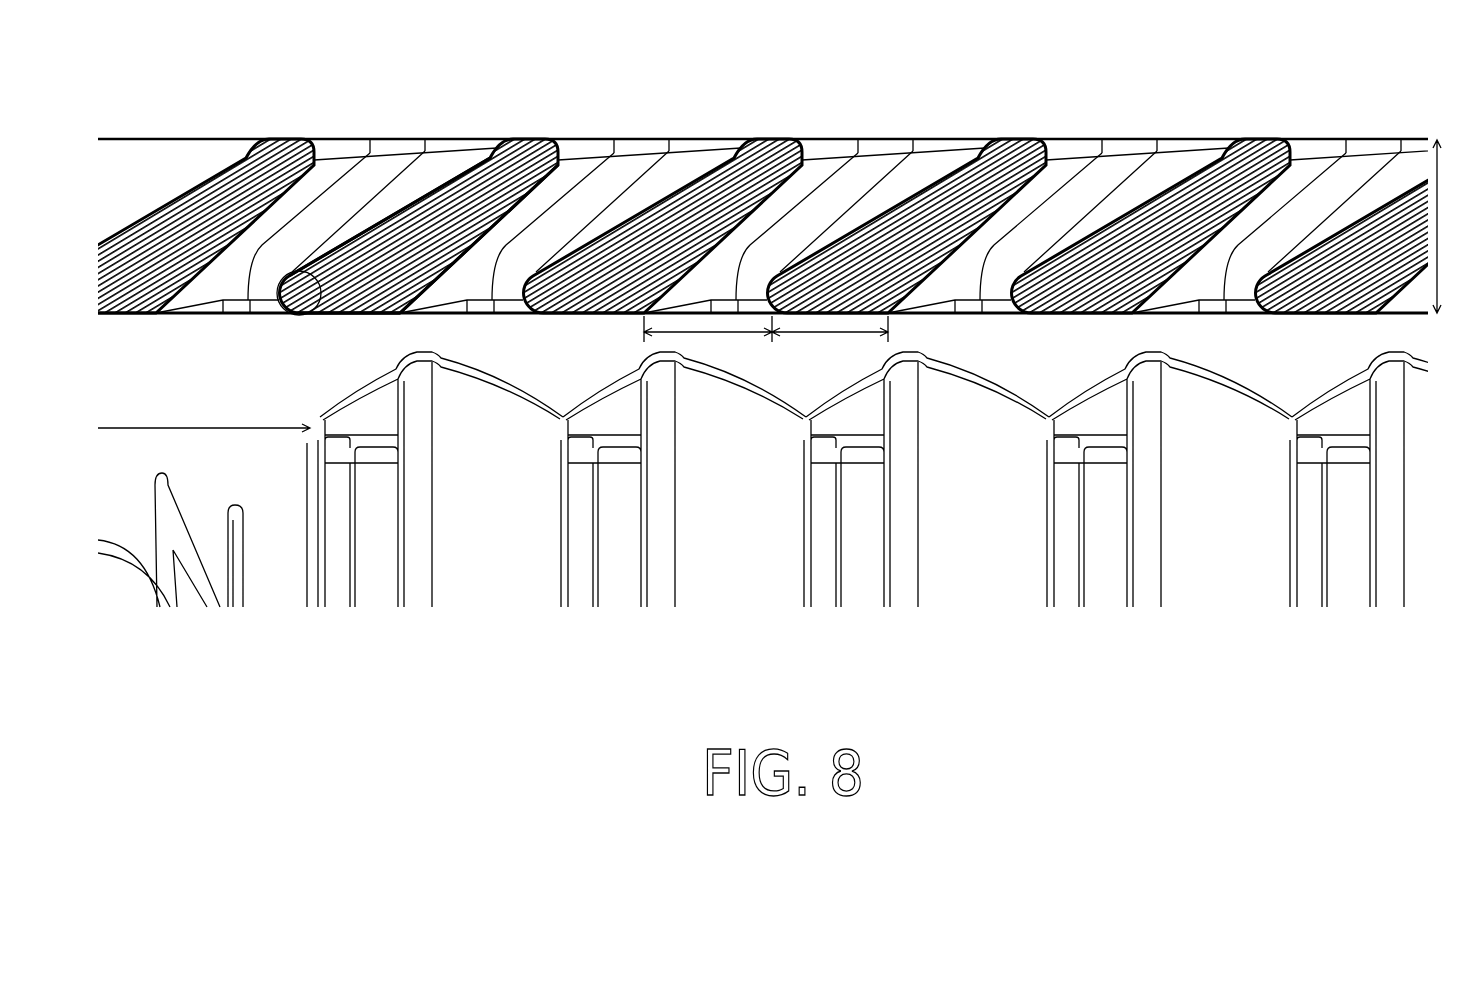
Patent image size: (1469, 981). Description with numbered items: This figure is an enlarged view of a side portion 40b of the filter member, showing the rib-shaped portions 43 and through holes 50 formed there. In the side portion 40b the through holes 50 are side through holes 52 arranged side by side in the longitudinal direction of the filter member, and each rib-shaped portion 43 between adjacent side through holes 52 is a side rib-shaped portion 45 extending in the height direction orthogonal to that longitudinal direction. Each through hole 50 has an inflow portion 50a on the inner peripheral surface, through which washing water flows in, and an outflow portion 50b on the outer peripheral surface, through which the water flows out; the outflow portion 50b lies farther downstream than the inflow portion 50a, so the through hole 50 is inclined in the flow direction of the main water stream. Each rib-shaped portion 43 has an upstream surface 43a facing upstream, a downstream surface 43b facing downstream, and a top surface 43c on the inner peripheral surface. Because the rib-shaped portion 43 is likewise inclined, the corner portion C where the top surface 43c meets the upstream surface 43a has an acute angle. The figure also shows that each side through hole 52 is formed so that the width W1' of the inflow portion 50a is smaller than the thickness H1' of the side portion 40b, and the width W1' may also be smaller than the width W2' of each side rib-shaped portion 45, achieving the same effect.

The side portion 40b is at (1339, 139).
The rib-shaped portion 43 is at (752, 181).
The side rib-shaped portion 45 is at (703, 222).
The upstream surface 43a is at (433, 183).
The downstream surface 43b is at (489, 292).
The top surface 43c is at (352, 314).
The through hole 50 is at (824, 175).
The side through hole 52 is at (600, 218).
The inflow portion 50a is at (477, 313).
The outflow portion 50b is at (642, 145).
The corner portion C is at (310, 306).
The thickness of the side portion H1' is at (1451, 226).
The width of the inflow portion W1' is at (708, 339).
The width of the side rib-shaped portion W2' is at (830, 339).